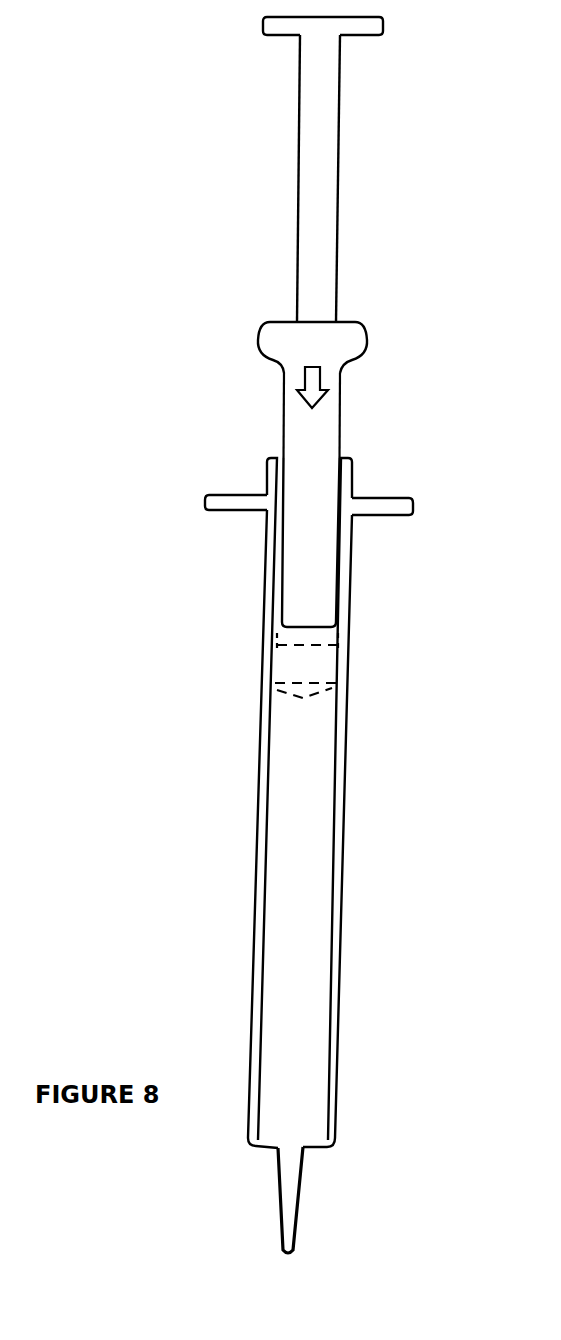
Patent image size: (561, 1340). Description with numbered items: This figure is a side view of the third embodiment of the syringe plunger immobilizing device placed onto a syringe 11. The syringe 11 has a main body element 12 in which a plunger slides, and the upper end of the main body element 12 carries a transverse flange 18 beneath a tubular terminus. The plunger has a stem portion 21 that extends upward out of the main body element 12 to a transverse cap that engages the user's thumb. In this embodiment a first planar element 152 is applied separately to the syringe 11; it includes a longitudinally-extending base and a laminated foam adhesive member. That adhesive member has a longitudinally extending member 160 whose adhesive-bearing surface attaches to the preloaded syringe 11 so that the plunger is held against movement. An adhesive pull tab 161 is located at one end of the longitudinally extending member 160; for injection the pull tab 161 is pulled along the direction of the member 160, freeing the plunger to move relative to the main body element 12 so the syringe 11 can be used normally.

The syringe 11 is at (234, 812).
The main body element 12 is at (293, 665).
The transverse flange 18 is at (245, 503).
The stem portion 21 is at (325, 210).
The first planar element 152 is at (262, 420).
The longitudinally extending member 160 is at (313, 546).
The adhesive pull tab 161 is at (273, 337).